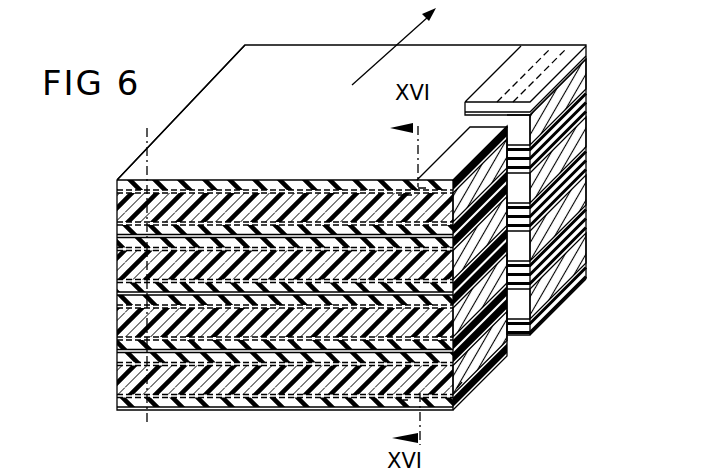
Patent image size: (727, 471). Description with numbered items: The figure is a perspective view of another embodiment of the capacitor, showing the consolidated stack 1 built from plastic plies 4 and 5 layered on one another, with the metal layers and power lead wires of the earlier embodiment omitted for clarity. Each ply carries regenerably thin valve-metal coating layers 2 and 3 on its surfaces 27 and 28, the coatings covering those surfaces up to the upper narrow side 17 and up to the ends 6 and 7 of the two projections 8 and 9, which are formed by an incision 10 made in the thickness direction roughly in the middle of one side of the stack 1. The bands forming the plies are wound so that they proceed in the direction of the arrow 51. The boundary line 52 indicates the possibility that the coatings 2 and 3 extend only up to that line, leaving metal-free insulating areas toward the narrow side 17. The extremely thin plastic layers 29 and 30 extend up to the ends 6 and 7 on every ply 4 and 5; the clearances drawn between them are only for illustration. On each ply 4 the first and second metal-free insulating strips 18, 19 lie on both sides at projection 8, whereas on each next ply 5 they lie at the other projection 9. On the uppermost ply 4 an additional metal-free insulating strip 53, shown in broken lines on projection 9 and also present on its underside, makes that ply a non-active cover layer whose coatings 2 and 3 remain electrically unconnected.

The consolidated stack 1 is at (302, 62).
The coating layer 2 is at (220, 183).
The coating layer 3 is at (272, 217).
The plastic ply 4 is at (130, 209).
The plastic ply 5 is at (130, 263).
The end of projection 6 is at (462, 162).
The end of projection 7 is at (581, 82).
The projection 8 is at (470, 128).
The projection 9 is at (565, 50).
The incision 10 is at (477, 105).
The narrow side 17 is at (226, 69).
The first metal-free insulating strip 18 is at (420, 188).
The second metal-free insulating strip 19 is at (398, 195).
The surface of plastic ply 27 is at (322, 200).
The surface of plastic ply 28 is at (362, 205).
The extremely thin plastic layer 29 is at (120, 184).
The extremely thin plastic layer 30 is at (122, 230).
The arrow 51 is at (413, 28).
The boundary line 52 is at (146, 138).
The metal-free insulating strip 53 is at (520, 68).